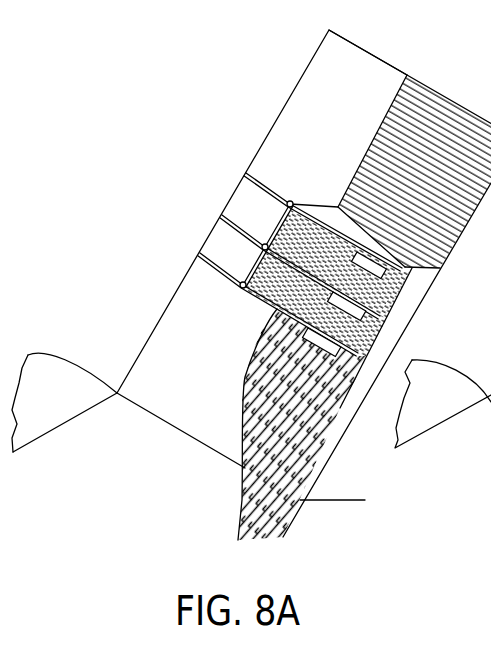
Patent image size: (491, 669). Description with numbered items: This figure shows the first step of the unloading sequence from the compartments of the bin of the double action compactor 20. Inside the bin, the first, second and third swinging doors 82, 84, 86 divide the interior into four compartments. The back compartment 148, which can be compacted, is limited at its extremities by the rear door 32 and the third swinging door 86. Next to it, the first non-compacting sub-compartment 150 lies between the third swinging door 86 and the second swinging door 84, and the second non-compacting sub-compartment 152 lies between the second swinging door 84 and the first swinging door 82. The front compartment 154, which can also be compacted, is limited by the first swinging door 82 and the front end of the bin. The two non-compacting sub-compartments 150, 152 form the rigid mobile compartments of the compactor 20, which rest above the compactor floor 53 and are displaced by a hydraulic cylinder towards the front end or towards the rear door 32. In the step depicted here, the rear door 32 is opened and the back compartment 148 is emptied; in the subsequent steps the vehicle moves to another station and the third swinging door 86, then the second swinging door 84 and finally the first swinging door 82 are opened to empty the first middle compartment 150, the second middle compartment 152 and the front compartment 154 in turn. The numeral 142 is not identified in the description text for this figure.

The double action compactor 20 is at (130, 163).
The rear door 32 is at (82, 395).
The compactor floor 53 is at (408, 300).
The first swinging door 82 is at (286, 220).
The second swinging door 84 is at (265, 212).
The third swinging door 86 is at (262, 290).
The anvil portion 142 is at (364, 424).
The back compartment 148 is at (187, 347).
The first non-compacting sub-compartment 150 is at (240, 247).
The second non-compacting sub-compartment 152 is at (255, 185).
The front compartment 154 is at (333, 88).